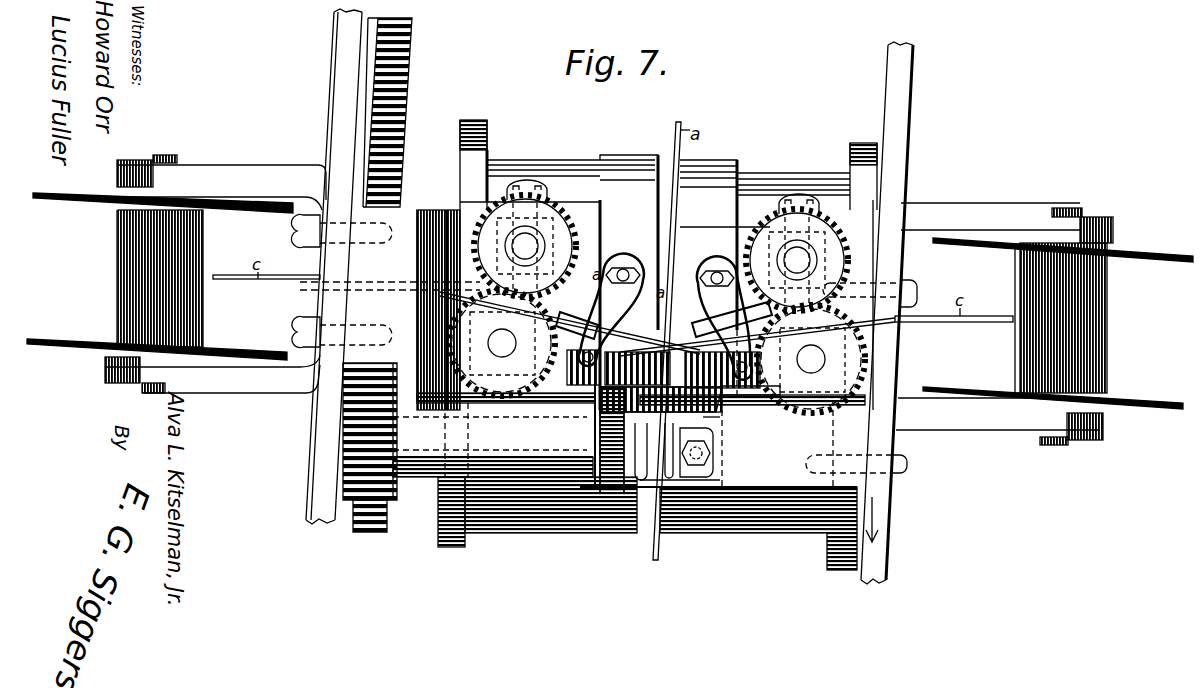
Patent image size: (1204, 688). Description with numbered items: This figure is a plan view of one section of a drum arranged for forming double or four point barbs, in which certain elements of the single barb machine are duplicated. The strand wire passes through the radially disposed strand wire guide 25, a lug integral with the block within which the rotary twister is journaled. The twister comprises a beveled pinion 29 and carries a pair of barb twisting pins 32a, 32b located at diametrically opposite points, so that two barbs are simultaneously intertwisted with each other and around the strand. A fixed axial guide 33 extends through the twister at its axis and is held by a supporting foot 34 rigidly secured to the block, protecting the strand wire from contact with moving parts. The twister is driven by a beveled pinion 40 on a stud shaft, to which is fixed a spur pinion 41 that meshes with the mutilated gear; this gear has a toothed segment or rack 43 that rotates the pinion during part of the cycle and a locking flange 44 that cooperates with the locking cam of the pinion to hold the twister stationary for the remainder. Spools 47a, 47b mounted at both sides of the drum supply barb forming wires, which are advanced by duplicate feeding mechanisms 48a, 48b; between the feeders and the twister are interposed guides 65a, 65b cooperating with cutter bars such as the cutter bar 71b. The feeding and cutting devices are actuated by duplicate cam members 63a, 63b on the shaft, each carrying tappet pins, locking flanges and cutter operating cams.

The locking flange 44 is at (366, 118).
The toothed segment or rack 43 is at (400, 110).
The spur pinion 41 is at (353, 440).
The spool 47a is at (127, 283).
The spool 47b is at (1103, 342).
The feeding mechanism 48a is at (556, 234).
The feeding mechanism 48b is at (813, 380).
The guide 65a is at (615, 296).
The guide 65b is at (724, 303).
The barb twisting pin 32a is at (570, 323).
The barb twisting pin 32b is at (757, 323).
The strand wire guide 25 is at (593, 387).
The cutter bar 71b is at (733, 393).
The beveled pinion 29 is at (703, 417).
The fixed axial guide 33 is at (713, 470).
The beveled pinion 40 is at (617, 490).
The supporting foot 34 is at (697, 483).
The cam member 63a is at (513, 517).
The cam member 63b is at (770, 520).